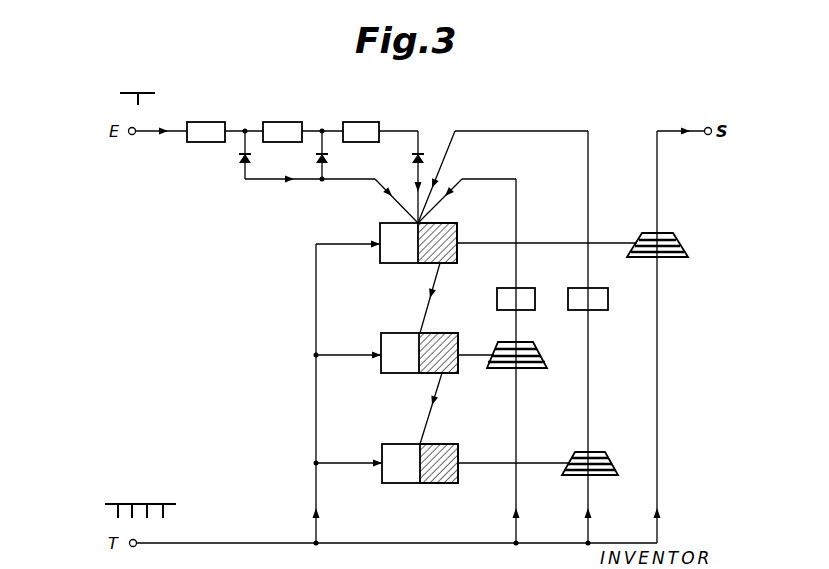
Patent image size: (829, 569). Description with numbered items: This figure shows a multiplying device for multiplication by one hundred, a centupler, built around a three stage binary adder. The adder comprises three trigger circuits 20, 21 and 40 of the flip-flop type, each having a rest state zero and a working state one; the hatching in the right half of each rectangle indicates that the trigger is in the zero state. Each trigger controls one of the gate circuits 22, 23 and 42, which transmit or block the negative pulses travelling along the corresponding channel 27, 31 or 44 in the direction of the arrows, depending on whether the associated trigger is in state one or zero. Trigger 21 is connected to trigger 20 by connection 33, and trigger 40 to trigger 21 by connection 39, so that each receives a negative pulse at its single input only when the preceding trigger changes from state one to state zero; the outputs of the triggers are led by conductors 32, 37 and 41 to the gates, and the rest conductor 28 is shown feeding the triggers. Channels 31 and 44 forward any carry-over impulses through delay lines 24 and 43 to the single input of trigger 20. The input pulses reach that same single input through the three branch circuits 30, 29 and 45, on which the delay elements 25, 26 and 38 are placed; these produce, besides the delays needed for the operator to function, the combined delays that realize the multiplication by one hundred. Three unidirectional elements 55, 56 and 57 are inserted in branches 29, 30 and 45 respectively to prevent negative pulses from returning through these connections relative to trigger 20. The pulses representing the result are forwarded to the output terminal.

The trigger circuit 20 is at (388, 264).
The trigger circuit 21 is at (395, 374).
The gate circuit 22 is at (682, 246).
The gate circuit 23 is at (535, 349).
The delay line 24 is at (535, 290).
The delay line 25 is at (196, 122).
The delay line 26 is at (280, 122).
The channel 27 is at (412, 543).
The conductor 28 is at (315, 333).
The branch circuit 29 is at (299, 155).
The branch circuit 30 is at (259, 180).
The channel 31 is at (492, 180).
The output conductor 32 is at (532, 243).
The connection 33 is at (434, 287).
The output conductor 37 is at (467, 354).
The delay line 38 is at (357, 122).
The connection 39 is at (435, 399).
The trigger circuit 40 is at (393, 484).
The output conductor 41 is at (525, 463).
The gate circuit 42 is at (612, 464).
The delay line 43 is at (607, 293).
The channel 44 is at (520, 131).
The branch circuit 45 is at (410, 131).
The unidirectional element 55 is at (327, 159).
The unidirectional element 56 is at (240, 163).
The unidirectional element 57 is at (414, 159).